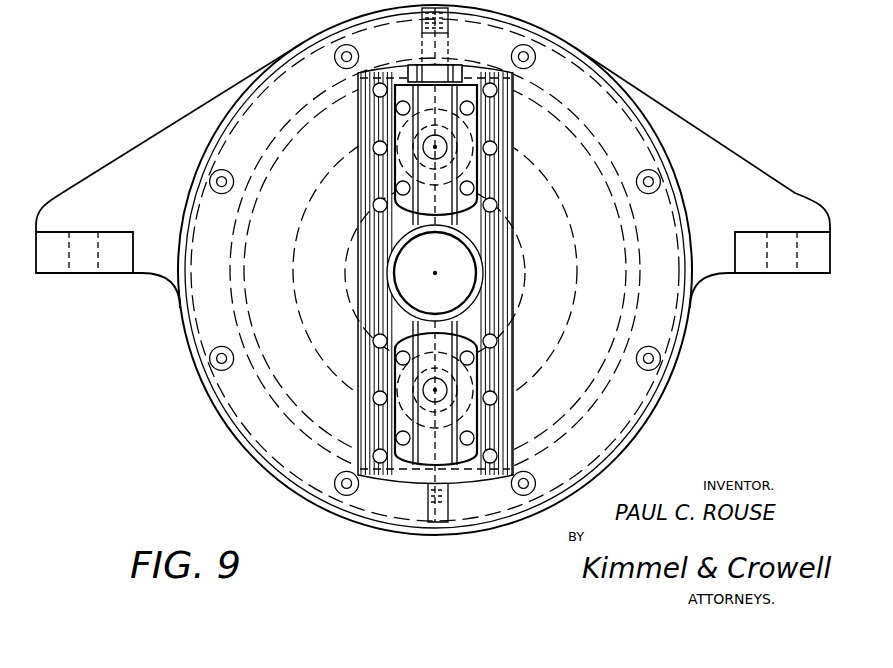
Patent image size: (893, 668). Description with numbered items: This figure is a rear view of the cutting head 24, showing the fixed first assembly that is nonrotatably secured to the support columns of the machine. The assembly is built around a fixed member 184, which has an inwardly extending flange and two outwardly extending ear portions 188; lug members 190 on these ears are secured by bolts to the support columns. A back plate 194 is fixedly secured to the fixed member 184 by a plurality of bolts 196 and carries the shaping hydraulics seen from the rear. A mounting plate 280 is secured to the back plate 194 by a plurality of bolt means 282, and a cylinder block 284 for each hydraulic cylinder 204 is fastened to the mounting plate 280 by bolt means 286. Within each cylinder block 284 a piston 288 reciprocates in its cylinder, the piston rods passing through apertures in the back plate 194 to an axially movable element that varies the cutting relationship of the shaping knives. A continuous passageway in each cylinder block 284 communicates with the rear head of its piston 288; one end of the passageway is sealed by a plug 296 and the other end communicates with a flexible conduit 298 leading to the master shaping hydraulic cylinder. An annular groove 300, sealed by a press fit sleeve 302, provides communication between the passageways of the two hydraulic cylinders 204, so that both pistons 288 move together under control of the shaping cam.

The cutting head 24 is at (666, 89).
The fixed member 184 is at (554, 38).
The ear portions 188 is at (93, 173).
The lug members 190 is at (110, 238).
The back plate 194 is at (632, 132).
The bolts 196 is at (337, 62).
The hydraulic cylinders 204 is at (394, 182).
The mounting plate 280 is at (513, 117).
The bolt means 282 is at (373, 147).
The cylinder blocks 284 is at (475, 170).
The bolt means 286 is at (400, 101).
The pistons 288 is at (470, 162).
The plug 296 is at (444, 66).
The flexible conduit 298 is at (447, 513).
The annular groove 300 is at (356, 270).
The press fit sleeve 302 is at (479, 256).